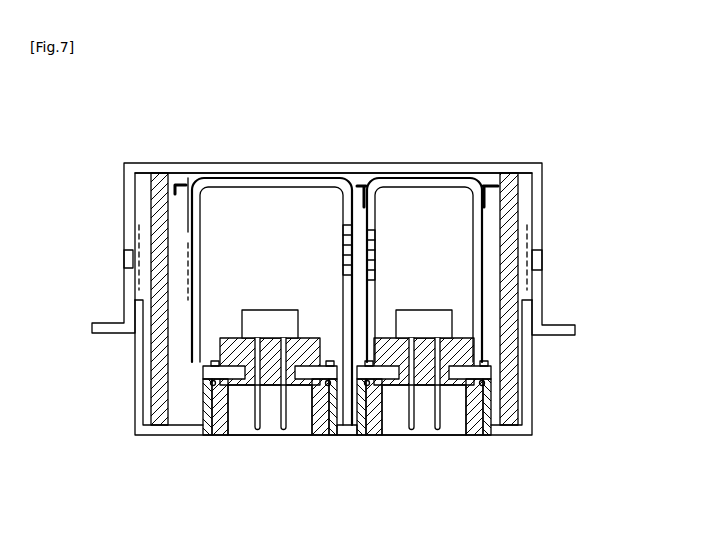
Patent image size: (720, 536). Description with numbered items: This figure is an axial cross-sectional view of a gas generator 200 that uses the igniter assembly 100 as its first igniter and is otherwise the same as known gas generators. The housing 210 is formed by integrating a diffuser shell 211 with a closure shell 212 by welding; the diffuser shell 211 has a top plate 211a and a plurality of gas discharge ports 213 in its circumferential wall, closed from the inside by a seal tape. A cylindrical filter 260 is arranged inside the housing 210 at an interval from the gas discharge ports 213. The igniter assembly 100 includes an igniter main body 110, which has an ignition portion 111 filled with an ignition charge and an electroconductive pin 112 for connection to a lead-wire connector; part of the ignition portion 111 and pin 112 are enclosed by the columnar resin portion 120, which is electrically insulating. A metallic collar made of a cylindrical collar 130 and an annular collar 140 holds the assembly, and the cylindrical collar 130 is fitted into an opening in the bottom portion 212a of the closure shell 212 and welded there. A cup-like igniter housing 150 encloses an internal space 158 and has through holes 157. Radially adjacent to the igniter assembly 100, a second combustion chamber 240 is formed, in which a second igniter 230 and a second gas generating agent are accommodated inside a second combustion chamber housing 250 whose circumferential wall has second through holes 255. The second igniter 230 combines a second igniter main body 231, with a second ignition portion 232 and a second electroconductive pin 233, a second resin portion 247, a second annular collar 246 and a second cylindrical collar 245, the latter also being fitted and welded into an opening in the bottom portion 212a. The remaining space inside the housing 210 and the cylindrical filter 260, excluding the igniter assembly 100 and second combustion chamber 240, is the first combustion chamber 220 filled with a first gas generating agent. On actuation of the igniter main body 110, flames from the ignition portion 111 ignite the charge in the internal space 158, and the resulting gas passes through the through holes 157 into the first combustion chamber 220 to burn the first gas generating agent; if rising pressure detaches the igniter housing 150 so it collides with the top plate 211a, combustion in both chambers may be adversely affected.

The igniter assembly 100 is at (455, 445).
The igniter main body 110 is at (416, 305).
The ignition portion 111 is at (424, 324).
The electroconductive pin 112 is at (411, 428).
The resin portion 120 is at (373, 437).
The cylindrical collar 130 is at (364, 437).
The annular collar 140 is at (386, 372).
The igniter housing 150 is at (415, 186).
The through holes 157 is at (373, 240).
The internal space 158 is at (424, 274).
The gas generator 200 is at (467, 157).
The housing 210 is at (637, 304).
The diffuser shell 211 is at (544, 300).
The top plate 211a is at (349, 163).
The closure shell 212 is at (533, 370).
The bottom portion 212a is at (499, 437).
The gas discharge ports 213 is at (533, 262).
The first combustion chamber 220 is at (488, 225).
The second igniter 230 is at (250, 443).
The second igniter main body 231 is at (257, 305).
The second ignition portion 232 is at (270, 324).
The second electroconductive pin 233 is at (284, 429).
The second combustion chamber 240 is at (272, 272).
The second cylindrical collar 245 is at (205, 404).
The second annular collar 246 is at (215, 374).
The second resin portion 247 is at (212, 437).
The second combustion chamber housing 250 is at (243, 188).
The second through holes 255 is at (346, 266).
The cylindrical filter 260 is at (157, 217).